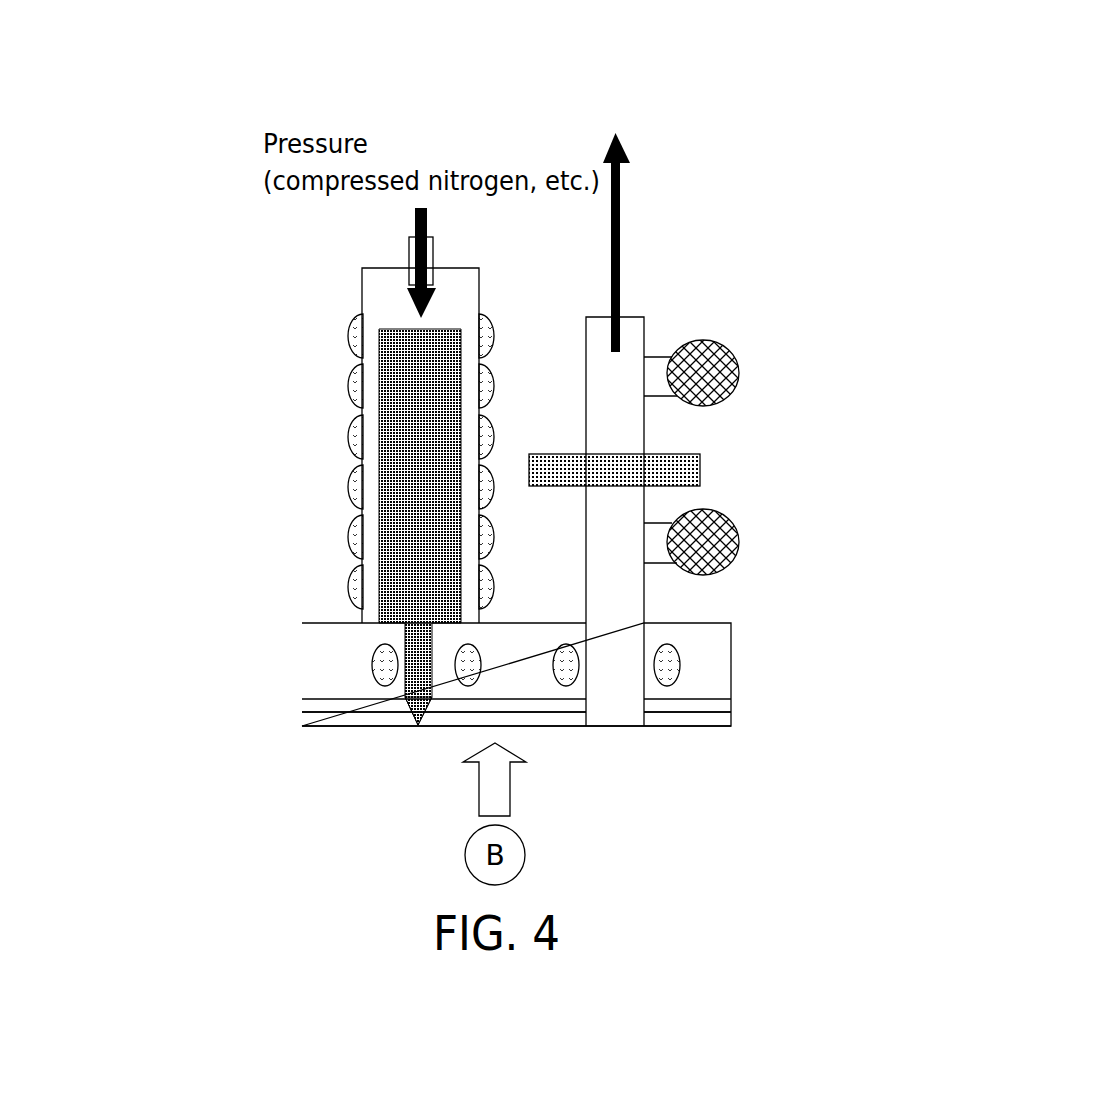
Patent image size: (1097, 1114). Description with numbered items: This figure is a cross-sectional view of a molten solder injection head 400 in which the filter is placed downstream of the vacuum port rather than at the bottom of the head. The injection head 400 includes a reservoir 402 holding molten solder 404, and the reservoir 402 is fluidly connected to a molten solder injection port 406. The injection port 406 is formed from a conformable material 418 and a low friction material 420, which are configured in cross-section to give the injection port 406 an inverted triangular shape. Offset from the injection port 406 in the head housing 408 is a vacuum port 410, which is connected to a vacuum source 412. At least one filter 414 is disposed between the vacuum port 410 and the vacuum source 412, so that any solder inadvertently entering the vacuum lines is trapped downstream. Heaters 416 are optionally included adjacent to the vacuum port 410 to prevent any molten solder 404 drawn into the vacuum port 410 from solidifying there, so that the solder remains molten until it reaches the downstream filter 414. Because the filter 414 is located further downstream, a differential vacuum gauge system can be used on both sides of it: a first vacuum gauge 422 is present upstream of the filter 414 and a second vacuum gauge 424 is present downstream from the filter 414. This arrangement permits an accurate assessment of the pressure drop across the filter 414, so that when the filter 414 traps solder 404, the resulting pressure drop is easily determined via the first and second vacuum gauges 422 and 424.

The molten solder injection head 400 is at (736, 86).
The reservoir 402 is at (373, 415).
The molten solder 404 is at (400, 478).
The molten solder injection port 406 is at (418, 727).
The head housing 408 is at (302, 647).
The vacuum port 410 is at (618, 722).
The vacuum source 412 is at (702, 123).
The filter 414 is at (683, 462).
The heaters 416 is at (348, 330).
The conformable material 418 is at (302, 705).
The low friction material 420 is at (302, 728).
The first vacuum gauge 422 is at (740, 548).
The second vacuum gauge 424 is at (740, 380).